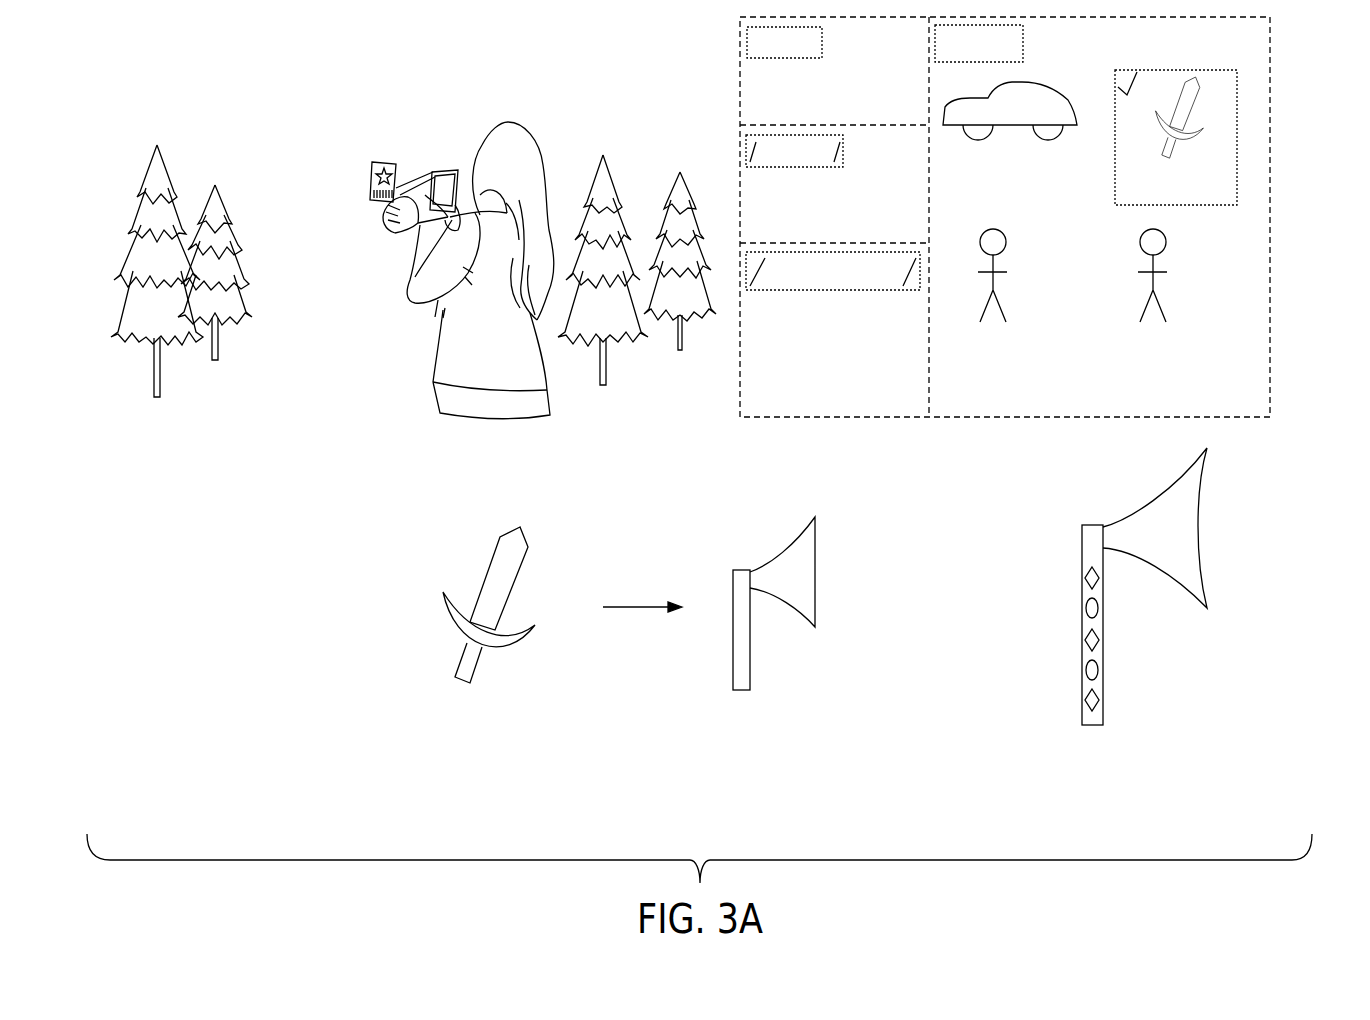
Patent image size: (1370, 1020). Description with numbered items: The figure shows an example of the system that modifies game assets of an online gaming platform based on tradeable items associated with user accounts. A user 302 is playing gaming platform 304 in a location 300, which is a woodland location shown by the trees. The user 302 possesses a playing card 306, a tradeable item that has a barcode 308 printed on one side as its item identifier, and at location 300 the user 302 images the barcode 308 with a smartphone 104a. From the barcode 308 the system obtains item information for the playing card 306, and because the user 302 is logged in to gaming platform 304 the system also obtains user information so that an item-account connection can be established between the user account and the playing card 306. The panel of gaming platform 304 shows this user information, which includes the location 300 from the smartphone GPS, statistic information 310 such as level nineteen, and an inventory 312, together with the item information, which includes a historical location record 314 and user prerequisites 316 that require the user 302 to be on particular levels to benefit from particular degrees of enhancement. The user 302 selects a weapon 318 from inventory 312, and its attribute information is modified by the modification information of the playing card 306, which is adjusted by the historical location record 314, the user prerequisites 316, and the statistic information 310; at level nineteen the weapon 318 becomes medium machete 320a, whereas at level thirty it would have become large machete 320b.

The location 300 is at (228, 516).
The user 302 is at (530, 127).
The gaming platform 304 is at (1300, 107).
The playing card 306 is at (382, 160).
The barcode 308 is at (372, 195).
The smartphone 104a is at (440, 170).
The statistic information 310 is at (913, 58).
The inventory 312 is at (1158, 58).
The historical location record 314 is at (913, 168).
The user prerequisites 316 is at (913, 408).
The weapon 318 is at (470, 735).
The medium machete 320a is at (750, 735).
The large machete 320b is at (1093, 768).